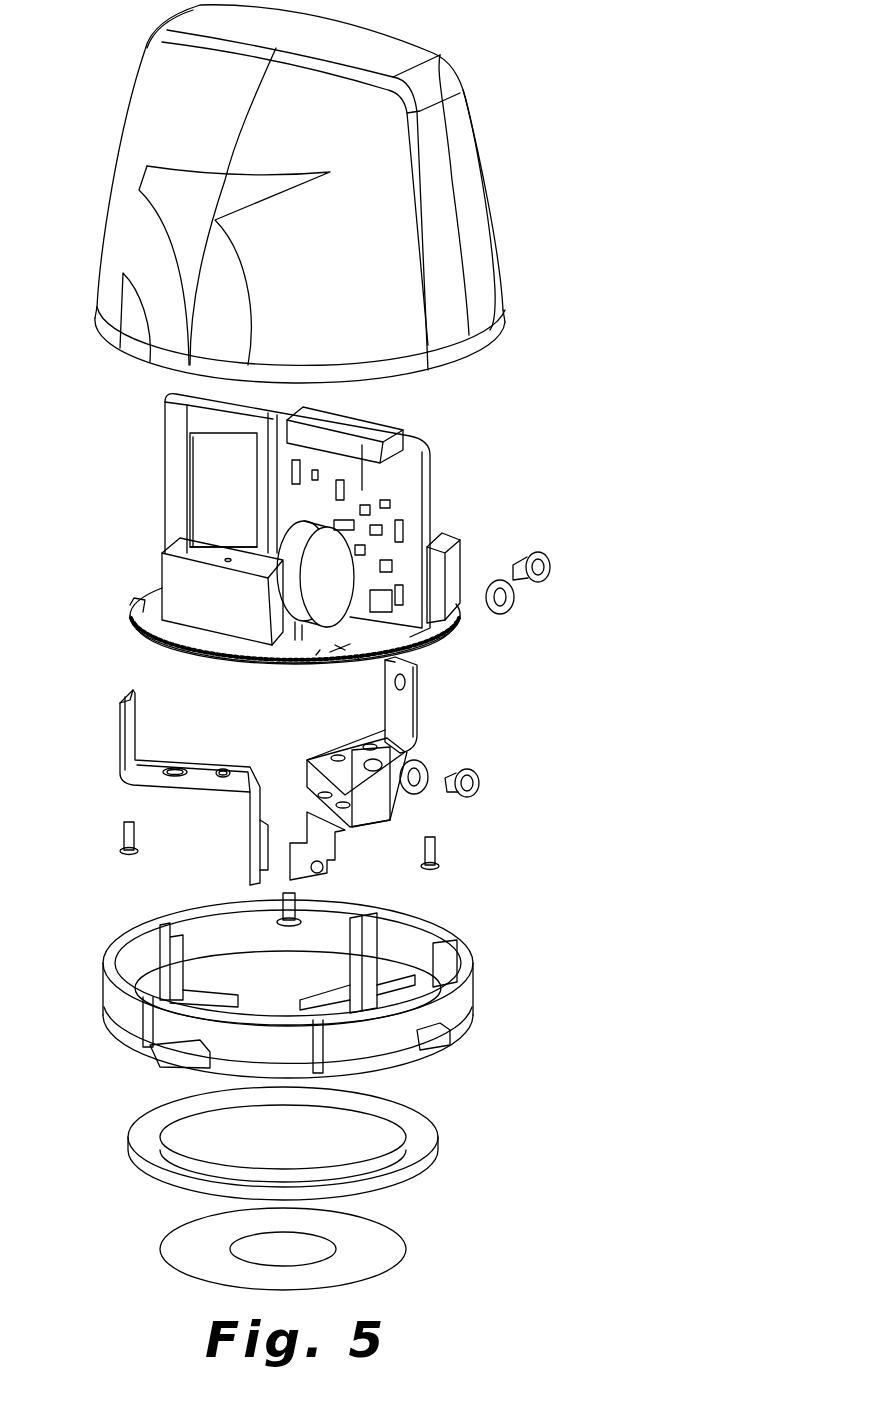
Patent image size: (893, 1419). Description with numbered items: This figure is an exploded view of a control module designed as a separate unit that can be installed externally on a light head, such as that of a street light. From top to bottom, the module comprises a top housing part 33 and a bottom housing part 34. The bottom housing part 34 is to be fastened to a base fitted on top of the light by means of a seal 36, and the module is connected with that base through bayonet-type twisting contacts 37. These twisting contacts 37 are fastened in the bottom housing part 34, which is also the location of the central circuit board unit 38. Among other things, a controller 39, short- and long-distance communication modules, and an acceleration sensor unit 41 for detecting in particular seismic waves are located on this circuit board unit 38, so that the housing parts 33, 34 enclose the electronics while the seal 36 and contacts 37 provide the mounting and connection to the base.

The top housing part 33 is at (463, 140).
The bottom housing part 34 is at (415, 952).
The seal 36 is at (423, 1145).
The bayonet-type twisting contacts 37 is at (118, 737).
The central circuit board unit 38 is at (143, 448).
The controller 39 is at (241, 501).
The acceleration sensor unit 41 is at (380, 440).